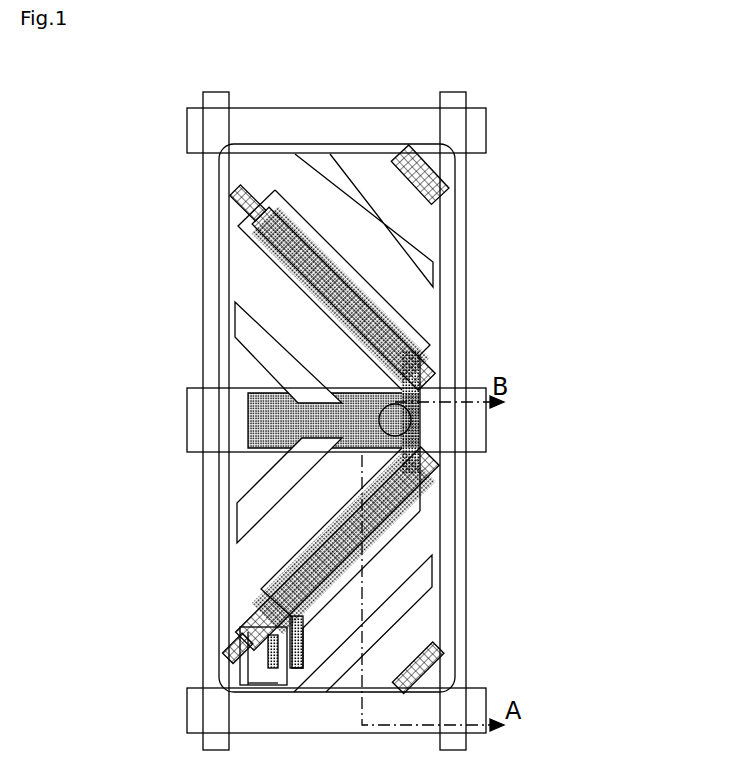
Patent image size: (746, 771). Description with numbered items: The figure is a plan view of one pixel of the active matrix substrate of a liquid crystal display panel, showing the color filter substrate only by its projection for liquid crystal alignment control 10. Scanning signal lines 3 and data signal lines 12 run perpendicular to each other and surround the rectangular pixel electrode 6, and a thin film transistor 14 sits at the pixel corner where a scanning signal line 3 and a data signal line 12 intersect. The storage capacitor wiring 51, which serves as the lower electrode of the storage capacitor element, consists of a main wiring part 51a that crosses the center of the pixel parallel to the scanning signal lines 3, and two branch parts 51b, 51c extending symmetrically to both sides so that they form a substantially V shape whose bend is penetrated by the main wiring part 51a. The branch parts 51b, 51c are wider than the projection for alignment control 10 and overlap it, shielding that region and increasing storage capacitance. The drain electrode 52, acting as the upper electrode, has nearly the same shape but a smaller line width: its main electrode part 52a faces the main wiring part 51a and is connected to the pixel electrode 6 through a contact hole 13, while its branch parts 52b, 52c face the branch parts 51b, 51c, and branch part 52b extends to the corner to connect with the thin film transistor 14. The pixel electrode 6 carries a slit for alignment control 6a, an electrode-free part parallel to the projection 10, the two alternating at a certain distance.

The scanning signal line 3 is at (478, 131).
The pixel electrode 6 is at (219, 160).
The slit for alignment control 6a is at (420, 262).
The projection for liquid crystal alignment control 10 is at (236, 201).
The data signal line 12 is at (454, 98).
The contact hole 13 is at (393, 436).
The thin film transistor 14 is at (237, 672).
The storage capacitor wiring 51 is at (397, 428).
The main wiring part 51a is at (482, 416).
The branch part 51b is at (399, 549).
The branch part 51c is at (437, 380).
The drain electrode 52 is at (250, 429).
The main electrode part 52a is at (262, 420).
The branch part 52b is at (330, 446).
The branch part 52c is at (260, 252).